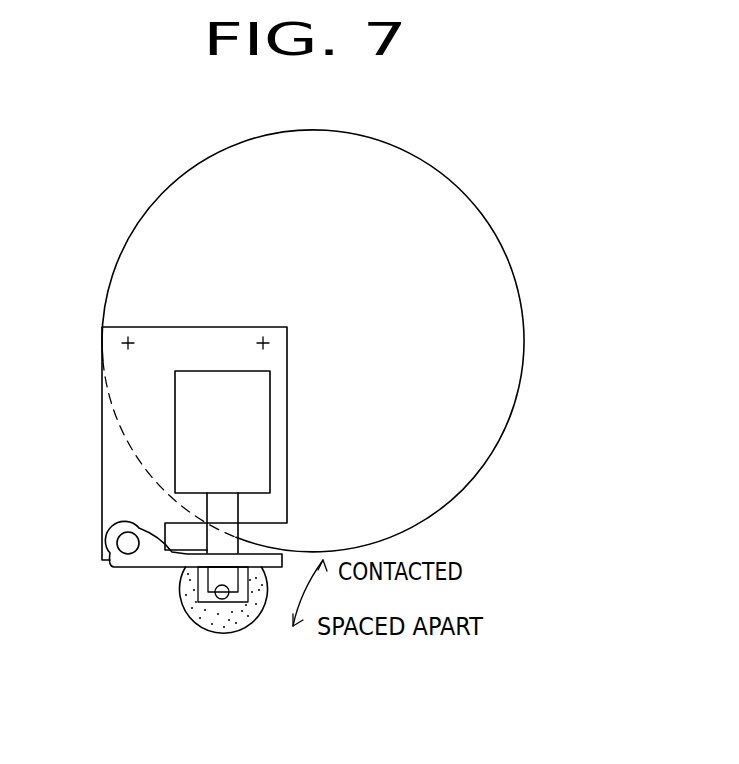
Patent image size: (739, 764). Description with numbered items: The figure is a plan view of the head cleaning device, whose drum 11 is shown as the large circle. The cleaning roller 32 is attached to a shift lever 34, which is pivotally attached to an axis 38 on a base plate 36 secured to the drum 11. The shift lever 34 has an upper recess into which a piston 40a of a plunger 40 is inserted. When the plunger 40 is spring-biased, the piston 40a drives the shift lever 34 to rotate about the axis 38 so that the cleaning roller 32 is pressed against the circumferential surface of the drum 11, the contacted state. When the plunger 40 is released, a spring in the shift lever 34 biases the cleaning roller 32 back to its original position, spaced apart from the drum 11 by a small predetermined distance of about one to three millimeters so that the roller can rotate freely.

The disk 11 is at (445, 182).
The cleaning roller 32 is at (208, 622).
The shift lever 34 is at (145, 565).
The support plate 36 is at (180, 332).
The axis 38 is at (118, 543).
The plunger 40 is at (248, 418).
The piston 40a is at (230, 508).